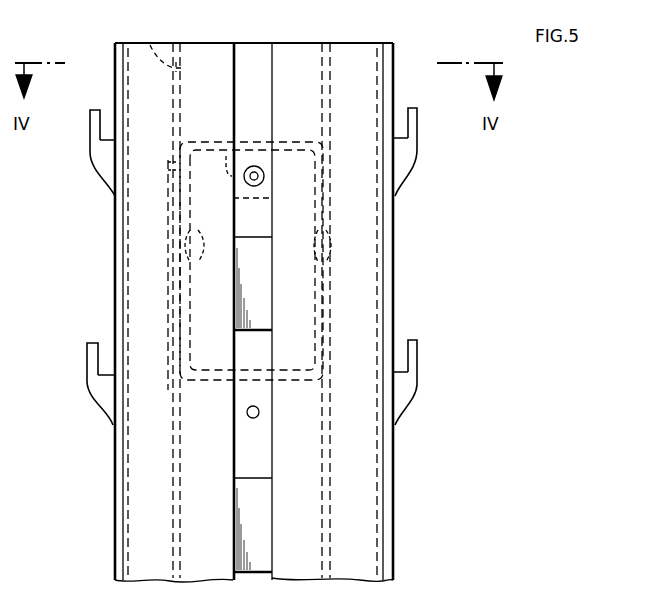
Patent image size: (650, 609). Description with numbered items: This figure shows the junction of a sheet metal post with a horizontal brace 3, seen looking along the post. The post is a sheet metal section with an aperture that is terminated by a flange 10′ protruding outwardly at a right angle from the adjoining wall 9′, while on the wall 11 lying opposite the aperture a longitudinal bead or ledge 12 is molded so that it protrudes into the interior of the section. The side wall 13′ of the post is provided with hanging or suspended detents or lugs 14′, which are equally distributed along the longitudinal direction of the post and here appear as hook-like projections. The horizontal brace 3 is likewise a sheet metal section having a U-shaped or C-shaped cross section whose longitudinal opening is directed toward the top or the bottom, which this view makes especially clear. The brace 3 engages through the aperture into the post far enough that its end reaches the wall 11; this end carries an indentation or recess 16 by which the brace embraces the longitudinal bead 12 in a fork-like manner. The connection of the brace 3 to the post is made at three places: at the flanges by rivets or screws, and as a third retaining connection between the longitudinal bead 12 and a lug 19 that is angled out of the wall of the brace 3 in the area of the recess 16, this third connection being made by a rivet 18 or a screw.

The horizontal brace 3 is at (188, 152).
The wall 9′ is at (165, 66).
The flange 10′ is at (178, 70).
The wall 11 is at (234, 578).
The longitudinal bead or ledge 12 is at (241, 444).
The side wall 13′ is at (115, 272).
The hanging detent or lug 14′ is at (108, 170).
The indentation or recess 16 is at (228, 148).
The rivet 18 is at (256, 165).
The lug 19 is at (272, 170).